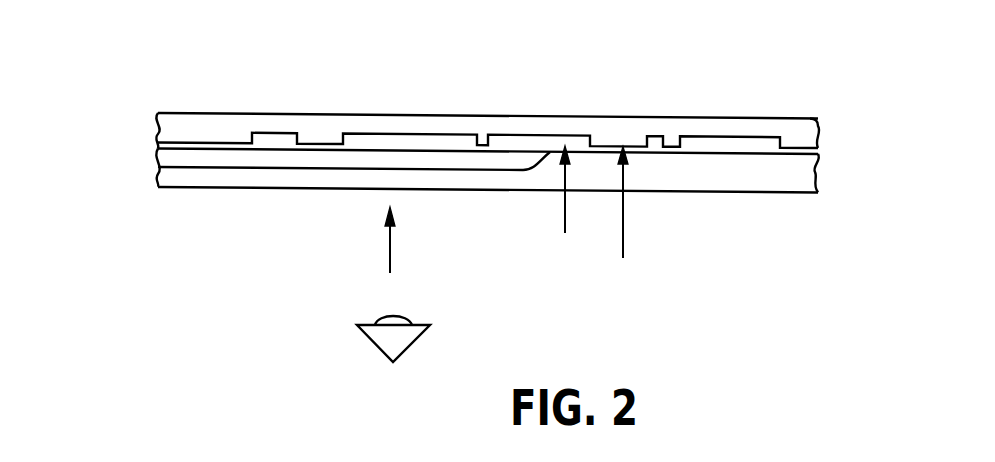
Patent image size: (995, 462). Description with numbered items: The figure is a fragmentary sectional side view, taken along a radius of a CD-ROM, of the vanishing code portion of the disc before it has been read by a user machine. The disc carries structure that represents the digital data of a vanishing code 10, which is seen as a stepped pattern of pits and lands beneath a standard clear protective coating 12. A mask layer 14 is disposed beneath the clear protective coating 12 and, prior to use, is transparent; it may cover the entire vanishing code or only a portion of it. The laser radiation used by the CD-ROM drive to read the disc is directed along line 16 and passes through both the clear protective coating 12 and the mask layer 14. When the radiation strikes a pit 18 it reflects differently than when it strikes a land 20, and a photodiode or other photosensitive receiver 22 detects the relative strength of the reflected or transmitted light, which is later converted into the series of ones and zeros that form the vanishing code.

The vanishing code 10 is at (542, 102).
The clear protective coating 12 is at (797, 177).
The mask layer 14 is at (168, 160).
The line 16 is at (394, 257).
The pit 18 is at (566, 207).
The land 20 is at (623, 219).
The photosensitive receiver 22 is at (410, 337).